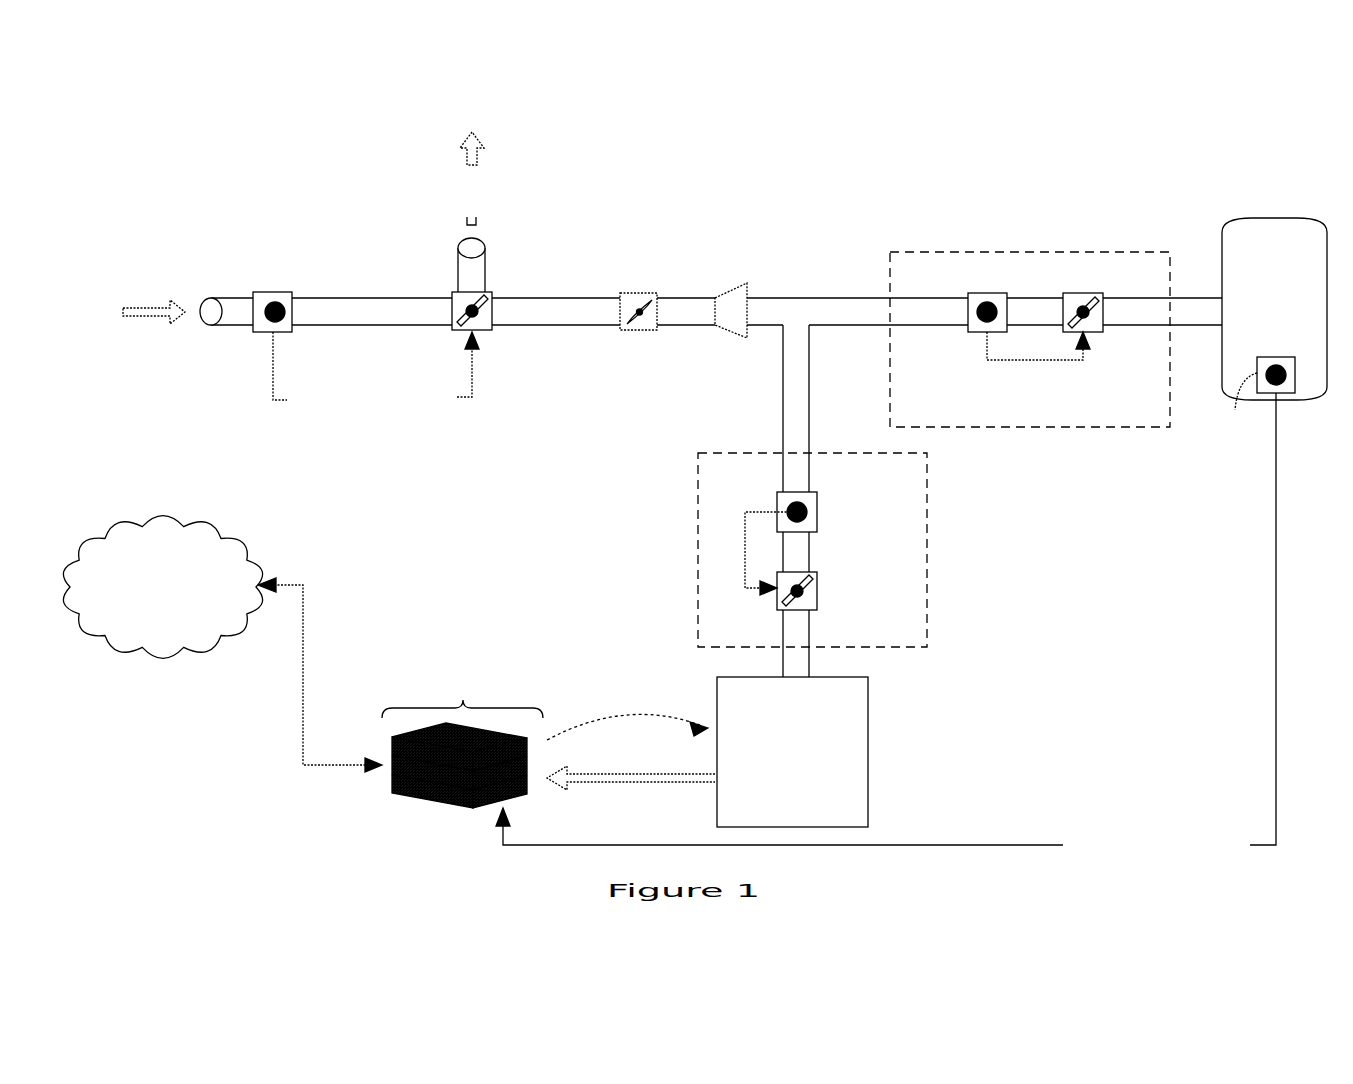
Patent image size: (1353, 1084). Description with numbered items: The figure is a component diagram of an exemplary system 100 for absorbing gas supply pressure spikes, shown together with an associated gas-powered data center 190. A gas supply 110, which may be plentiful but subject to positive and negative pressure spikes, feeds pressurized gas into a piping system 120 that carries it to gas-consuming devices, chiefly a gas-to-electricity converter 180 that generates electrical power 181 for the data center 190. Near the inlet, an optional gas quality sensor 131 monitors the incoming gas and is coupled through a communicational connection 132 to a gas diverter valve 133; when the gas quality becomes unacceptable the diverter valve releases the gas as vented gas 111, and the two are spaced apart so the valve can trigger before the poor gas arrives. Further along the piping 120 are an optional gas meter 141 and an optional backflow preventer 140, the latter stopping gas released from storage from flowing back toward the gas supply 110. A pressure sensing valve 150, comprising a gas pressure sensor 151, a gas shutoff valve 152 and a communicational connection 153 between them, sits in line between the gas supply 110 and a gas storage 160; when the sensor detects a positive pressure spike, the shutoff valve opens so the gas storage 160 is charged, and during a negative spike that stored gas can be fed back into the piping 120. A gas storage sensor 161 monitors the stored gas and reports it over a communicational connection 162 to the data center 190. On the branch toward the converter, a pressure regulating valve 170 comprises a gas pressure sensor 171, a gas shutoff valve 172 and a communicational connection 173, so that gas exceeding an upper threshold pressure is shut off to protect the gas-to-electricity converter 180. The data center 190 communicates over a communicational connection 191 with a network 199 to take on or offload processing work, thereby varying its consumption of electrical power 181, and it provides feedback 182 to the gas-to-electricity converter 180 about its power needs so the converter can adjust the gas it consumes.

The system 100 is at (170, 145).
The gas supply 110 is at (85, 283).
The vented gas 111 is at (475, 160).
The piping system 120 is at (847, 298).
The gas quality sensor 131 is at (267, 292).
The communicational connection 132 is at (262, 367).
The gas diverter valve 133 is at (452, 292).
The backflow preventer 140 is at (732, 283).
The gas meter 141 is at (640, 293).
The pressure sensing valve 150 is at (1043, 427).
The gas pressure sensor 151 is at (995, 293).
The gas shutoff valve 152 is at (1073, 293).
The communicational connection 153 is at (1058, 360).
The gas storage 160 is at (1274, 309).
The gas storage sensor 161 is at (1266, 357).
The communicational connection 162 is at (1274, 550).
The pressure regulating valve 170 is at (927, 530).
The gas pressure sensor 171 is at (777, 500).
The gas shutoff valve 172 is at (777, 603).
The communicational connection 173 is at (745, 572).
The gas-to-electricity converter 180 is at (792, 752).
The electrical power 181 is at (573, 785).
The feedback 182 is at (692, 715).
The data center 190 is at (382, 797).
The communicational connection 191 is at (305, 633).
The network 199 is at (162, 587).